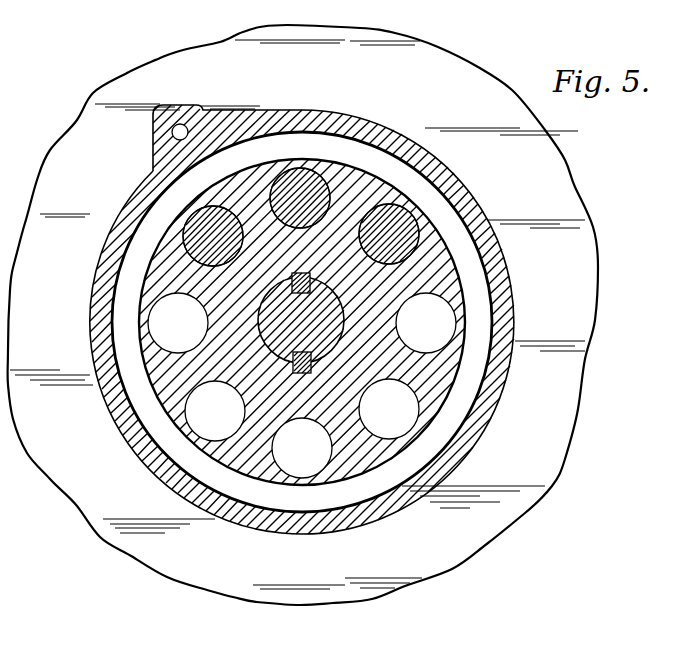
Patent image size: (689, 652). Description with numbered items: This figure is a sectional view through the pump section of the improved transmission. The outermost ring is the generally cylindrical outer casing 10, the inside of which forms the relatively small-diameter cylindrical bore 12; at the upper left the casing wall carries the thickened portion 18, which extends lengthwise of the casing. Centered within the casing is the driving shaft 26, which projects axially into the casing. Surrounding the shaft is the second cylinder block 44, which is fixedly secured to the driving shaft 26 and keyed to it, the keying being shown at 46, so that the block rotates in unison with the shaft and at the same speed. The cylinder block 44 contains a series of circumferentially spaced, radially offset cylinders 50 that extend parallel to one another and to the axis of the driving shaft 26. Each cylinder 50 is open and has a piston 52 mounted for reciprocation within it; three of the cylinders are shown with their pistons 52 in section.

The outer casing 10 is at (364, 116).
The cylindrical bore 12 is at (482, 363).
The thickened portion 18 is at (188, 110).
The driving shaft 26 is at (262, 320).
The cylinder block 44 is at (382, 180).
The key 46 is at (302, 373).
The cylinders 50 is at (190, 233).
The piston 52 is at (303, 178).